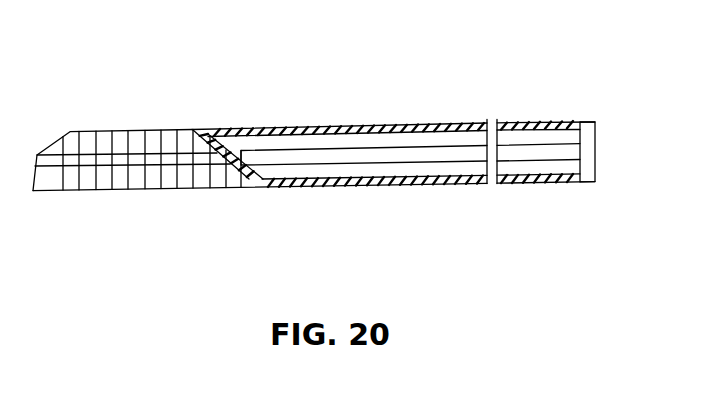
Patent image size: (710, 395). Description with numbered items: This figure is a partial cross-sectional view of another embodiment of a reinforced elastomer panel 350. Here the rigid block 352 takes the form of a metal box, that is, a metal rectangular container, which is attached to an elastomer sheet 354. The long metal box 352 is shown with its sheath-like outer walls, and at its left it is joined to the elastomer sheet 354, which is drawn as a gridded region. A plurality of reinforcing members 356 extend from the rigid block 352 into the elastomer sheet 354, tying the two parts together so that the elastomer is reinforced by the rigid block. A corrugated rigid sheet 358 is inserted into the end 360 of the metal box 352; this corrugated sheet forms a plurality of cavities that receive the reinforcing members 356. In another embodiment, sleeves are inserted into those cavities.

The reinforced elastomer panel 350 is at (360, 20).
The rigid block 352 is at (462, 125).
The elastomer sheet 354 is at (85, 142).
The reinforcing members 356 is at (153, 165).
The corrugated rigid sheet 358 is at (520, 160).
The end of the metal box 360 is at (595, 160).